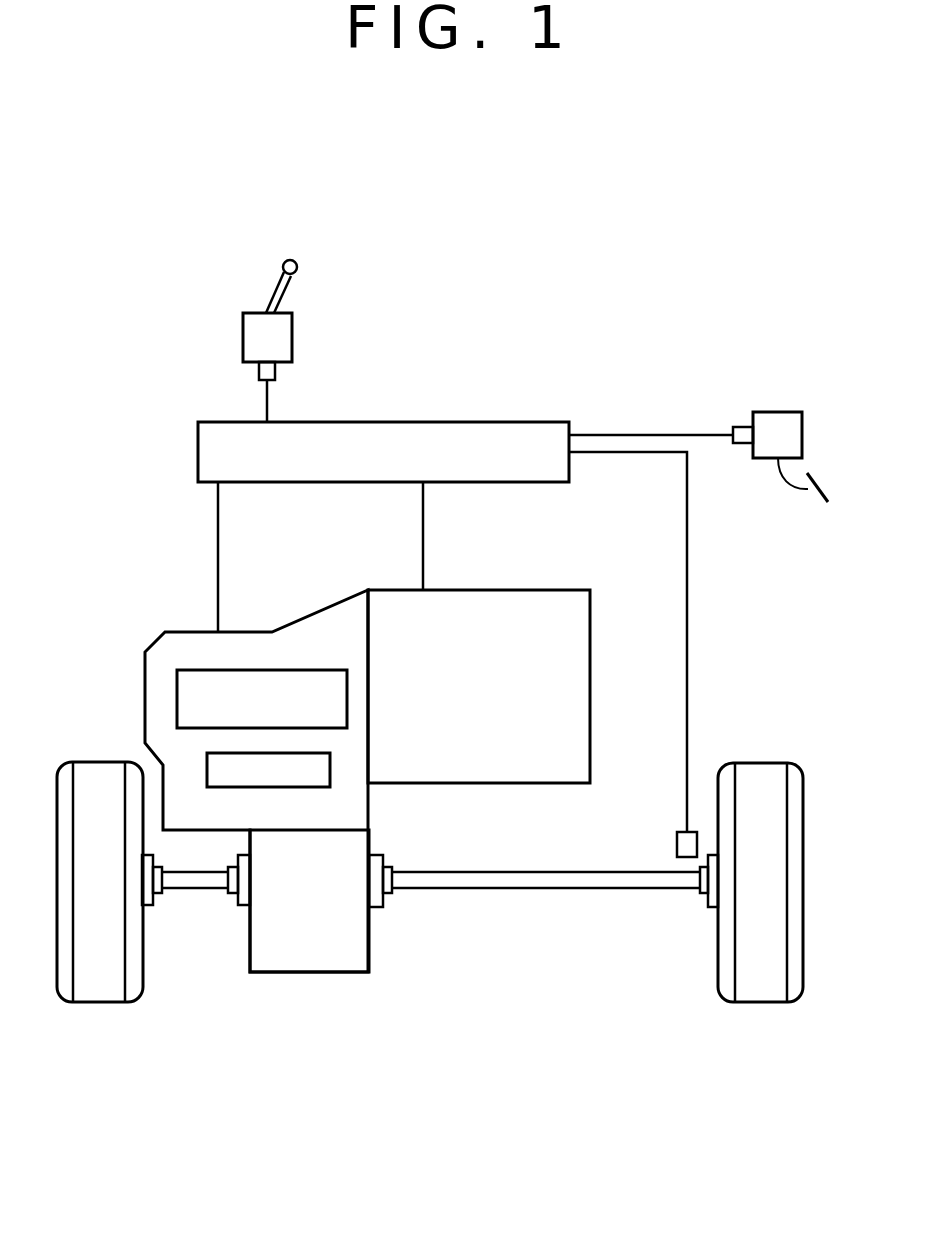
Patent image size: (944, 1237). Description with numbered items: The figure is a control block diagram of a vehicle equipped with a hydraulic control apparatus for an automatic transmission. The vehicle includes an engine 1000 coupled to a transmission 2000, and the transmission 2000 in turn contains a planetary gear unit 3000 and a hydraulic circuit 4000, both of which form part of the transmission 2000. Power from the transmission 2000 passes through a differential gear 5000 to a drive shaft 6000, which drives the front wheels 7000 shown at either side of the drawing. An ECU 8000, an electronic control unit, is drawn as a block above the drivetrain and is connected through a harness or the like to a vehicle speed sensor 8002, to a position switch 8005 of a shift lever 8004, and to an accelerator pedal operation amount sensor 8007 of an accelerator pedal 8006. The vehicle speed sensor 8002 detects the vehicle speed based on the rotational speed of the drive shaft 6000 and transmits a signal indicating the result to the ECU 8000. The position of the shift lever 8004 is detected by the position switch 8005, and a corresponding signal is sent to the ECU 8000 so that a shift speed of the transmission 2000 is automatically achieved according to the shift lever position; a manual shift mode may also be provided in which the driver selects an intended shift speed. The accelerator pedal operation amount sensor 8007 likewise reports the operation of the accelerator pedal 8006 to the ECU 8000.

The engine 1000 is at (513, 590).
The transmission 2000 is at (247, 632).
The planetary gear unit 3000 is at (263, 670).
The hydraulic circuit 4000 is at (298, 787).
The differential gear 5000 is at (312, 972).
The drive shaft 6000 is at (202, 888).
The front wheels 7000 is at (100, 762).
The ECU 8000 is at (457, 421).
The vehicle speed sensor 8002 is at (677, 845).
The shift lever 8004 is at (288, 283).
The position switch 8005 is at (259, 372).
The accelerator pedal 8006 is at (808, 490).
The accelerator pedal operation amount sensor 8007 is at (742, 427).